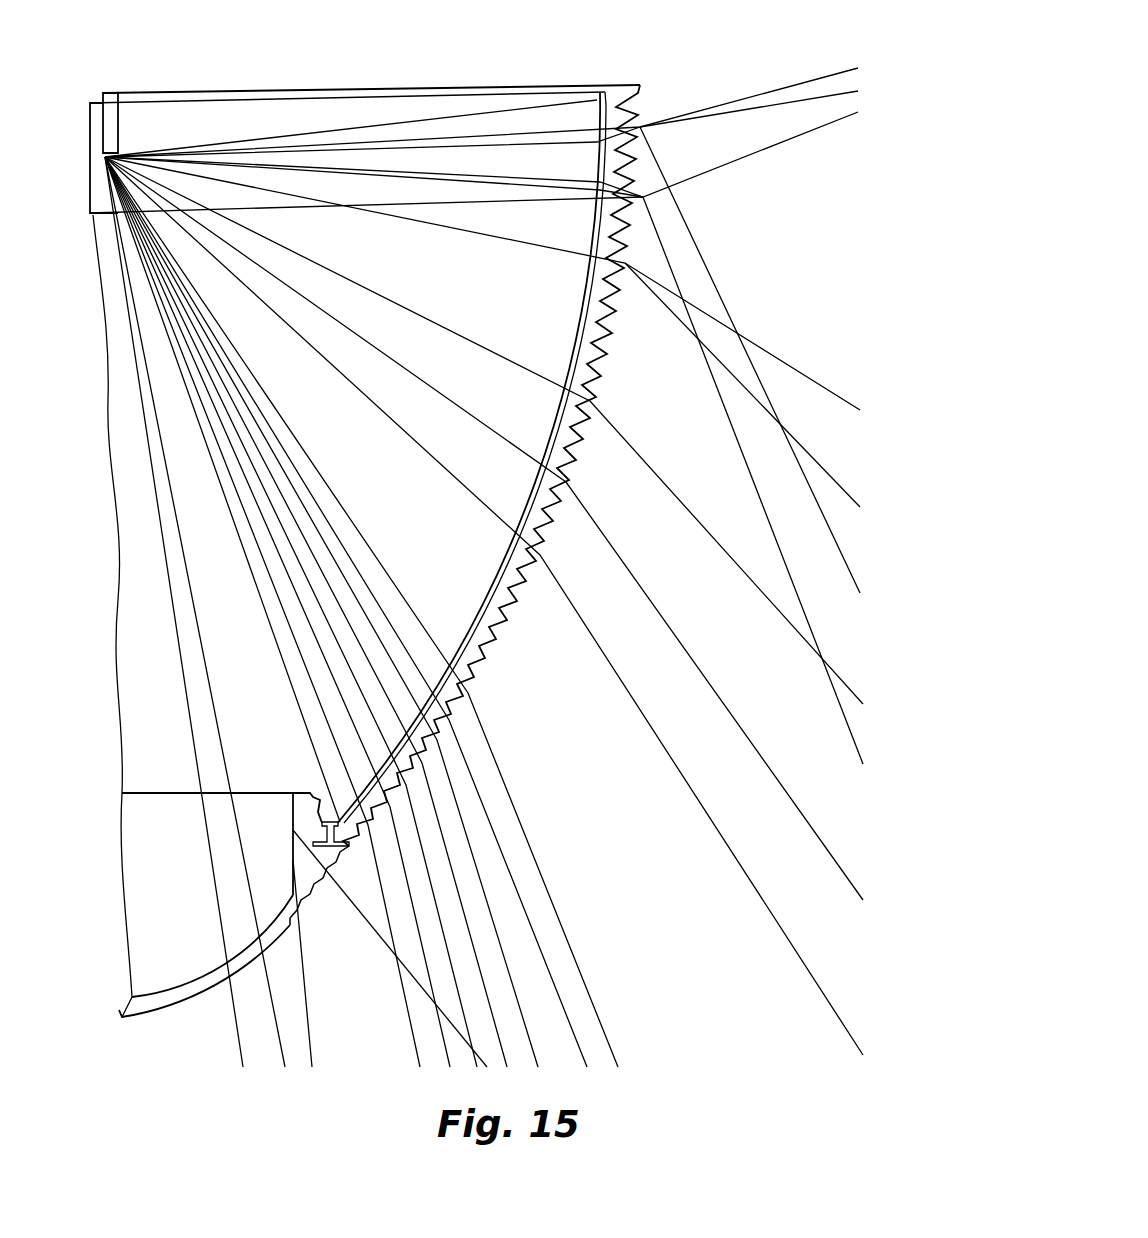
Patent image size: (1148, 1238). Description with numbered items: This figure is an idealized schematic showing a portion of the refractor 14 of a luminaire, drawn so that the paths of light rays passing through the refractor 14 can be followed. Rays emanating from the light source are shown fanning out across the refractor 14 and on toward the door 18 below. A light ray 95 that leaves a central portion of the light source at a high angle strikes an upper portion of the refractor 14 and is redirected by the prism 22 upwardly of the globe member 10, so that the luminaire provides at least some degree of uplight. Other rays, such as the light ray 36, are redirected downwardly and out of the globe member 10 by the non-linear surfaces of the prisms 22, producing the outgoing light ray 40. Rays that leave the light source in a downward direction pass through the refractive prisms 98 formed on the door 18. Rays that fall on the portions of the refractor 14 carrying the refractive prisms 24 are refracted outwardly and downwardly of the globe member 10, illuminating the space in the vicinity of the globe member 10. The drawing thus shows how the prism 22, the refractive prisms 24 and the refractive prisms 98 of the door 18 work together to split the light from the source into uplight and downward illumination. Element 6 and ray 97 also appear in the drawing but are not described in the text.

The light source 6 is at (100, 222).
The globe member 10 is at (787, 262).
The refractor 14 is at (540, 505).
The door 18 is at (305, 883).
The prism 22 is at (678, 155).
The refractive prisms 24 is at (612, 356).
The light ray 36 is at (503, 152).
The light ray 40 is at (698, 235).
The light ray 95 is at (250, 147).
The light ray 97 is at (705, 108).
The refractive prisms 98 is at (270, 962).